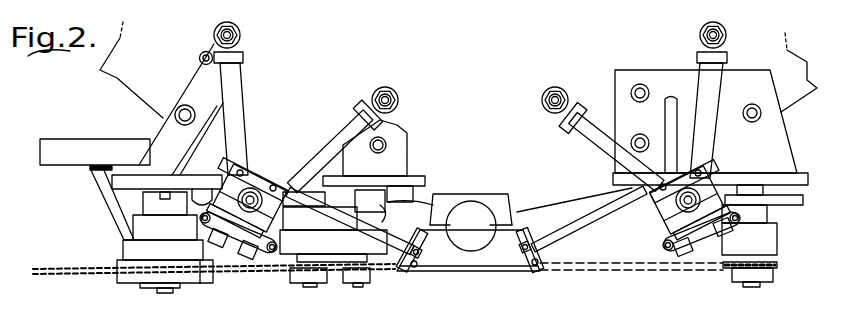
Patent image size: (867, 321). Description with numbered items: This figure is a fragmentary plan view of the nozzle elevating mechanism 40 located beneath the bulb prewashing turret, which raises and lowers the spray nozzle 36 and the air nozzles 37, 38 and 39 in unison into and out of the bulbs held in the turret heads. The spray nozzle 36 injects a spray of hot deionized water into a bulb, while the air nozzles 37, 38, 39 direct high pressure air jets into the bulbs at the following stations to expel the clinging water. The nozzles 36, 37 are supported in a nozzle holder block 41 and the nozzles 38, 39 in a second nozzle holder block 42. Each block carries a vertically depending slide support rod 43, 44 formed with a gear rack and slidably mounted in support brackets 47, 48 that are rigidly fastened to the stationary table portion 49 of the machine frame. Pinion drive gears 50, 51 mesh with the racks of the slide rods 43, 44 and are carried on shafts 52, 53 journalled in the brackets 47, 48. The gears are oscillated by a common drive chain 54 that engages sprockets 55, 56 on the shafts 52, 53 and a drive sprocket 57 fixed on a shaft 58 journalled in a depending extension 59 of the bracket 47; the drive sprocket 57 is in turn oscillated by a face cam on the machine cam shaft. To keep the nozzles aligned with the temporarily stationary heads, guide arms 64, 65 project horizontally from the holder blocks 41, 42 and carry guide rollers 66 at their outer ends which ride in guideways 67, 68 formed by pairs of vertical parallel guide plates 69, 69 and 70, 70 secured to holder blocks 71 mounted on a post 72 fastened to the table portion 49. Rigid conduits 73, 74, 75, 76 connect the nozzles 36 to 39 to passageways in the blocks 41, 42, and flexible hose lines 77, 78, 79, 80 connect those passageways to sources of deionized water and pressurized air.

The spray nozzle 36 is at (241, 37).
The air nozzle 37 is at (397, 94).
The air nozzle 38 is at (552, 88).
The air nozzle 39 is at (699, 35).
The elevating mechanism 40 is at (275, 284).
The nozzle holder block 41 is at (221, 174).
The nozzle holder block 42 is at (655, 218).
The slide support rod 43 is at (260, 176).
The slide support rod 44 is at (715, 172).
The support bracket 47 is at (203, 197).
The support bracket 48 is at (623, 195).
The table portion 49 is at (118, 79).
The pinion drive gear 50 is at (345, 198).
The pinion drive gear 51 is at (790, 205).
The shaft 52 is at (314, 287).
The shaft 53 is at (752, 285).
The drive chain 54 is at (595, 268).
The sprocket 55 is at (293, 278).
The sprocket 56 is at (732, 272).
The drive sprocket 57 is at (200, 274).
The shaft 58 is at (162, 290).
The depending extension 59 is at (133, 190).
The guide arm 64 is at (347, 283).
The guide arm 65 is at (606, 214).
The guide roller 66 is at (421, 249).
The guideway 67 is at (412, 268).
The guideway 68 is at (527, 267).
The guide plate 69 is at (414, 242).
The guide plate 70 is at (524, 243).
The holder block 71 is at (467, 270).
The post 72 is at (477, 207).
The conduit 73 is at (235, 97).
The conduit 74 is at (340, 125).
The conduit 75 is at (592, 140).
The conduit 76 is at (710, 87).
The hose line 77 is at (213, 253).
The hose line 78 is at (250, 253).
The hose line 79 is at (680, 258).
The hose line 80 is at (733, 231).